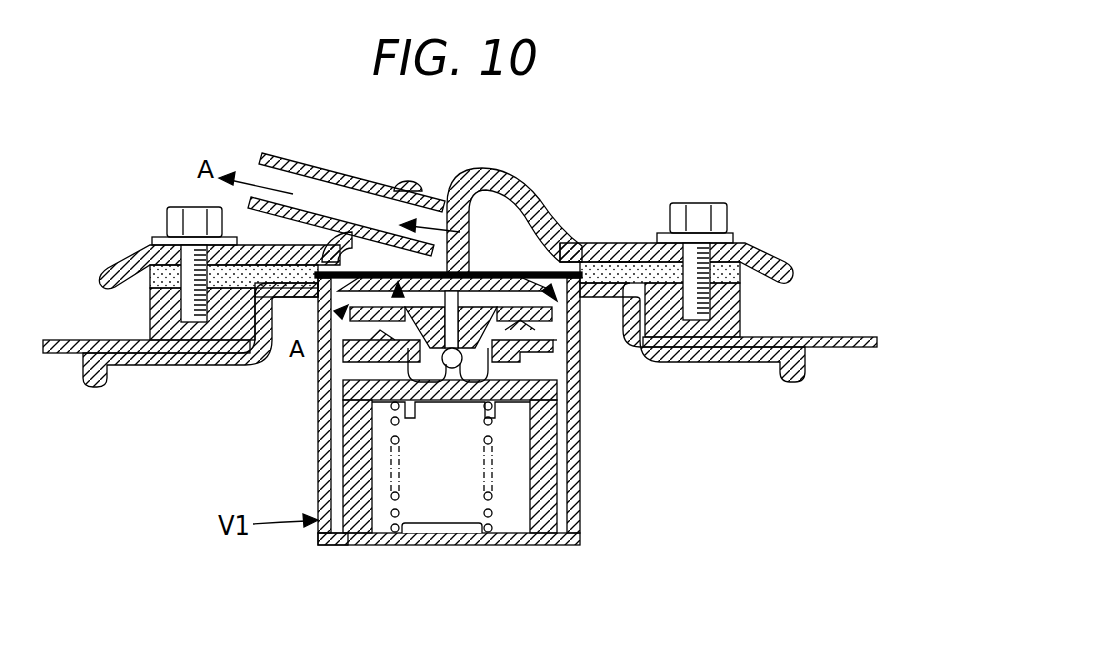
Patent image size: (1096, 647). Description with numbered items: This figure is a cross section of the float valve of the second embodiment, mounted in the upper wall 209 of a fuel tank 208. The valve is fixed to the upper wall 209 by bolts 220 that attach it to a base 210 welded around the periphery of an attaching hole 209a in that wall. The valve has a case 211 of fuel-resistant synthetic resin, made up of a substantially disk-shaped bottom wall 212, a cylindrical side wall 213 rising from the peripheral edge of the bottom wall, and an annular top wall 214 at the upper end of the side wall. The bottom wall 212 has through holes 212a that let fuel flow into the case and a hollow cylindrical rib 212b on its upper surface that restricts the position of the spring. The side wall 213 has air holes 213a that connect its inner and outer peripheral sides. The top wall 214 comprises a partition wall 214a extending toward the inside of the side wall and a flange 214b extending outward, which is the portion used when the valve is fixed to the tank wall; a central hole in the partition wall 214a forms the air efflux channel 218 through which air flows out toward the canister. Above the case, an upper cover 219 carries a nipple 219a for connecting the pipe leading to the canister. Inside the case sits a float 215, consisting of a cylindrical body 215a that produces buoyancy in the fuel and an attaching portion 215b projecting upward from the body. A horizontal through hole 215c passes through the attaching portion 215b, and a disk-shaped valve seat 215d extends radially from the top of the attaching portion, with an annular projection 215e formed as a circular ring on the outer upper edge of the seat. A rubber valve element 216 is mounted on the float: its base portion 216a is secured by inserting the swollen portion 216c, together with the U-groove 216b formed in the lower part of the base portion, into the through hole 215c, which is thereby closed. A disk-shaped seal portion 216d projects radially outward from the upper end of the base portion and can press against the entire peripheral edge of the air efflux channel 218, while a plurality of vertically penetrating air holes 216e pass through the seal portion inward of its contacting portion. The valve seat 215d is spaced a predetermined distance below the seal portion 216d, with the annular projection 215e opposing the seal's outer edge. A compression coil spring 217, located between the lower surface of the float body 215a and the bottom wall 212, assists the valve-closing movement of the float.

The fuel tank 208 is at (860, 322).
The upper wall 209 is at (834, 348).
The attaching hole 209a is at (578, 240).
The base 210 is at (735, 311).
The case 211 is at (462, 445).
The bottom wall 212 is at (490, 570).
The through holes 212a is at (360, 541).
The hollow cylindrical rib 212b is at (437, 544).
The side wall 213 is at (430, 404).
The air holes 213a is at (290, 299).
The top wall 214 is at (445, 195).
The partition wall 214a is at (540, 260).
The flange 214b is at (620, 252).
The float 215 is at (484, 426).
The cylindrical body 215a is at (450, 456).
The attaching portion 215b is at (560, 395).
The through hole 215c is at (405, 365).
The valve seat 215d is at (545, 352).
The annular projection 215e is at (560, 330).
The valve element 216 is at (448, 316).
The base portion 216a is at (448, 275).
The U-groove 216b is at (440, 376).
The swollen portion 216c is at (453, 368).
The seal portion 216d is at (332, 276).
The air holes 216e is at (500, 312).
The compression coil spring 217 is at (396, 501).
The air efflux channel 218 is at (467, 188).
The upper cover 219 is at (760, 258).
The nipple 219a is at (367, 186).
The bolts 220 is at (718, 204).